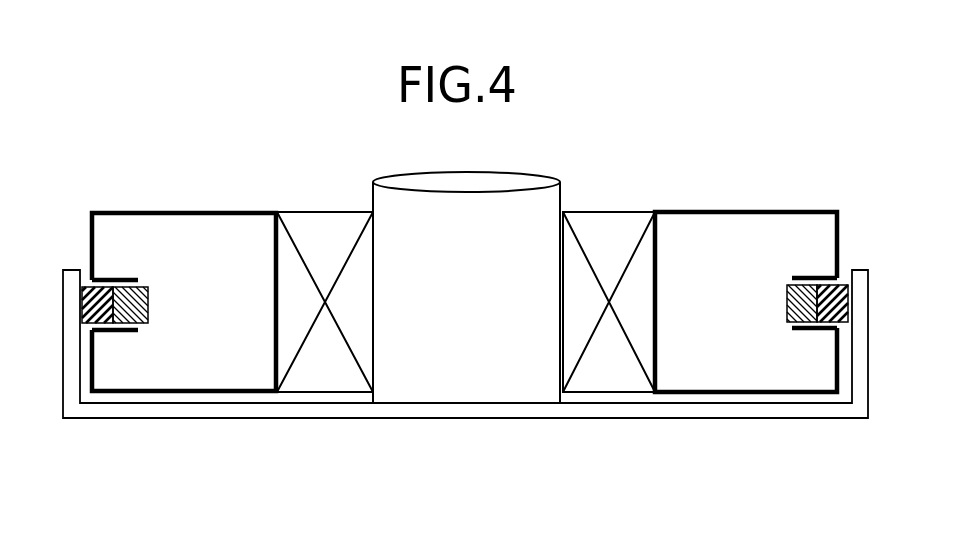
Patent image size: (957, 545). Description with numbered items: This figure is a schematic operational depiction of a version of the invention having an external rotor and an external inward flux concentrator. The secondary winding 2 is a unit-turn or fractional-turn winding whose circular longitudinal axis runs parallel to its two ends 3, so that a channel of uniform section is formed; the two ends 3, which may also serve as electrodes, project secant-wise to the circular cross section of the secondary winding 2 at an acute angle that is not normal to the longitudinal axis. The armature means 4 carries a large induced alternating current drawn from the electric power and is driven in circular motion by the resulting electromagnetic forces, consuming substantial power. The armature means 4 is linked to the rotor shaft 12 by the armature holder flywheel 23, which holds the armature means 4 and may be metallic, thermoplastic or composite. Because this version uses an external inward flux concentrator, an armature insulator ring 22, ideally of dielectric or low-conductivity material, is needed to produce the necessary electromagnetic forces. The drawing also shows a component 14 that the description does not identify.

The secondary winding 2 is at (145, 213).
The two ends (electrodes) of secondary winding 3 is at (124, 280).
The armature means 4 is at (149, 317).
The rotor shaft 12 is at (481, 215).
The coil (winding) 14 is at (332, 255).
The armature insulator ring 22 is at (149, 294).
The armature holder flywheel 23 is at (265, 413).